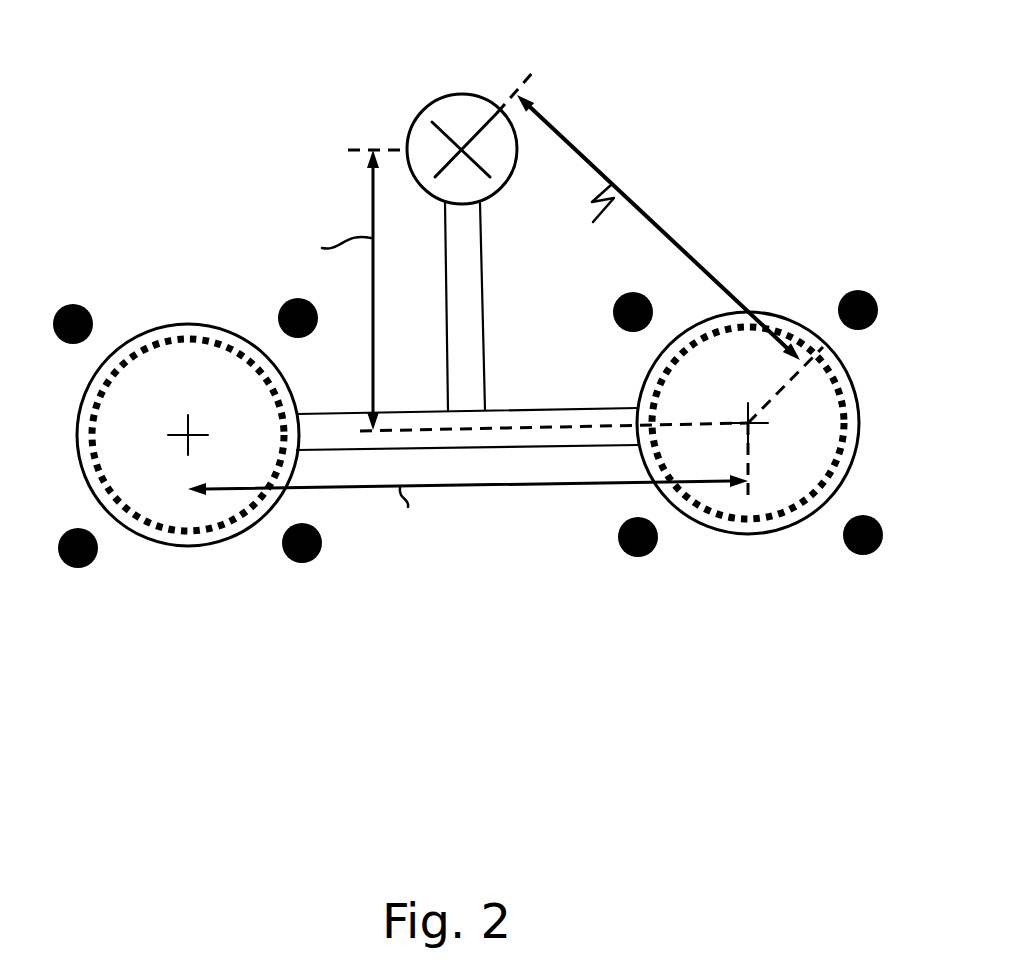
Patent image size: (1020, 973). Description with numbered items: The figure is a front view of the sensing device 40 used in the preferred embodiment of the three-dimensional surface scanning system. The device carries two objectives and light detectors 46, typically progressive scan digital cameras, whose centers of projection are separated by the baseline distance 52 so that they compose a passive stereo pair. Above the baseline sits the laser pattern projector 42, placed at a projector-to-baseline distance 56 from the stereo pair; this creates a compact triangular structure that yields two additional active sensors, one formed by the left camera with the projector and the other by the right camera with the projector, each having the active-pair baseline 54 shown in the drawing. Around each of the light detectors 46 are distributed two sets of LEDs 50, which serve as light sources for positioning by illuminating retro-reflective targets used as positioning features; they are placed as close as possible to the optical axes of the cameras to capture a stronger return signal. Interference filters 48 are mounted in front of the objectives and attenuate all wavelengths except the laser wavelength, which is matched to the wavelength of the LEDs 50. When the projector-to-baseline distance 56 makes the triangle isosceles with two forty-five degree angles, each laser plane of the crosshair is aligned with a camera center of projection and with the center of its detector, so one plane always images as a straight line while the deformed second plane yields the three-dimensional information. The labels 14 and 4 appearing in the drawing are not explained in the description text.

The sensing device 40 is at (228, 102).
The laser pattern projector 42 is at (460, 93).
The objectives and light detectors 46 is at (750, 538).
The interference filters 48 is at (188, 338).
The LEDs 50 is at (68, 305).
The distance D1 52 is at (505, 487).
The baseline D2 54 is at (652, 220).
The distance D3 56 is at (371, 205).
The rotation axis 14 is at (462, 155).
The tower 4 is at (401, 281).